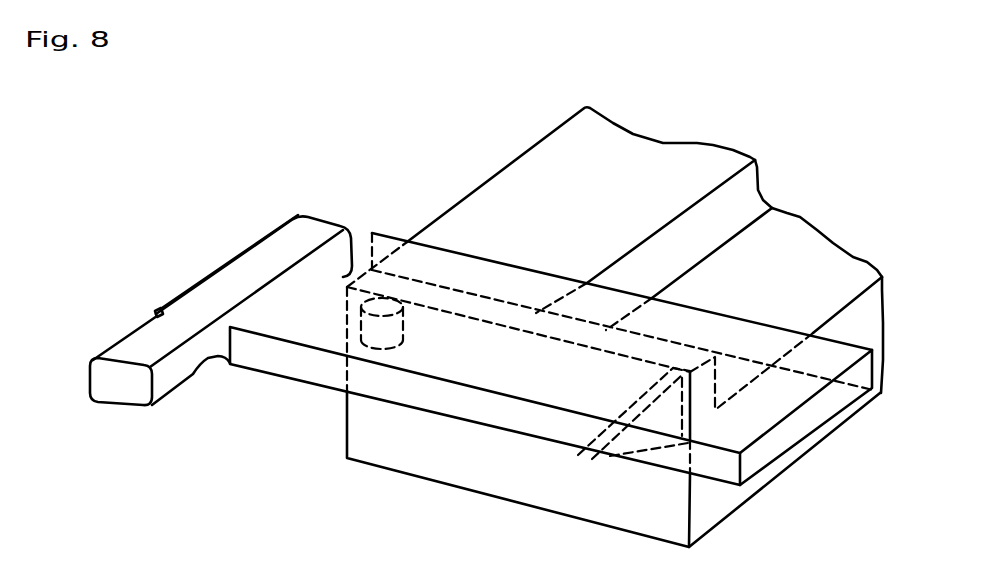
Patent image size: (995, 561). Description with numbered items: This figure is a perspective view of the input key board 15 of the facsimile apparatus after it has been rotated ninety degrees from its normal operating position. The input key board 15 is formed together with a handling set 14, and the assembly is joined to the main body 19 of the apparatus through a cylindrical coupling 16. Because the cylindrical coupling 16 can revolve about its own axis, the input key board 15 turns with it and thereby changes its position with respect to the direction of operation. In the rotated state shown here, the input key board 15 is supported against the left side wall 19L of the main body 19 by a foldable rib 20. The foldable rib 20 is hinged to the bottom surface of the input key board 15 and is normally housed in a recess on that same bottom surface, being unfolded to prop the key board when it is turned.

The handling set 14 is at (318, 238).
The input key board 15 is at (275, 360).
The cylindrical coupling 16 is at (398, 337).
The main body 19 is at (512, 180).
The left side wall 19L is at (373, 455).
The foldable rib 20 is at (622, 445).